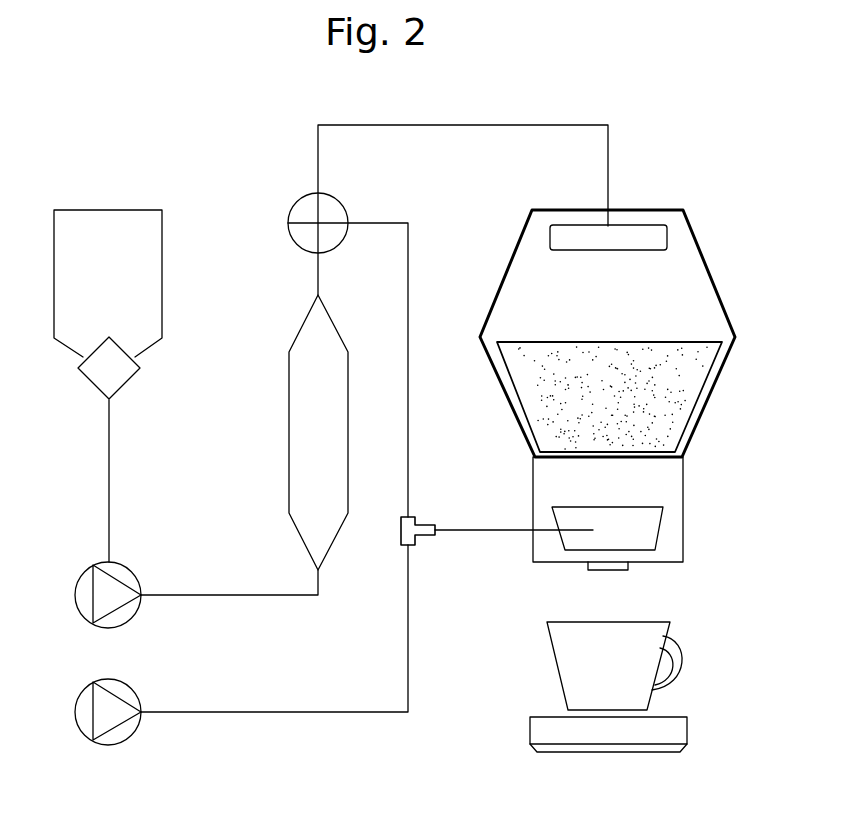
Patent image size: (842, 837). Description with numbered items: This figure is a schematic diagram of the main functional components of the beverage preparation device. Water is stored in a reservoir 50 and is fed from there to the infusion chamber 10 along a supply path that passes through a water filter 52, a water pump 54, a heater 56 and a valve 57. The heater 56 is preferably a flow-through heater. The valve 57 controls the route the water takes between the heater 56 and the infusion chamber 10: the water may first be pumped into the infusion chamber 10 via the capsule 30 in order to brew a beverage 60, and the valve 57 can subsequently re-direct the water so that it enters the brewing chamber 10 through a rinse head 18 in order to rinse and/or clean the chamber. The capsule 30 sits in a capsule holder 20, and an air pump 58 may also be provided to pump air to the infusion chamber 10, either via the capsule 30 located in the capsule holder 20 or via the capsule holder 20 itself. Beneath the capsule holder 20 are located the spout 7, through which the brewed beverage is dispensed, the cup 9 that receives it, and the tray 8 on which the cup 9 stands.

The spout 7 is at (588, 565).
The tray 8 is at (687, 730).
The cup 9 is at (572, 656).
The infusion chamber 10 is at (694, 287).
The rinse head 18 is at (648, 235).
The capsule holder 20 is at (683, 535).
The capsule 30 is at (628, 516).
The reservoir 50 is at (107, 213).
The water filter 52 is at (102, 380).
The water pump 54 is at (102, 600).
The heater 56 is at (305, 410).
The valve 57 is at (294, 210).
The air pump 58 is at (102, 717).
The beverage 60 is at (654, 398).